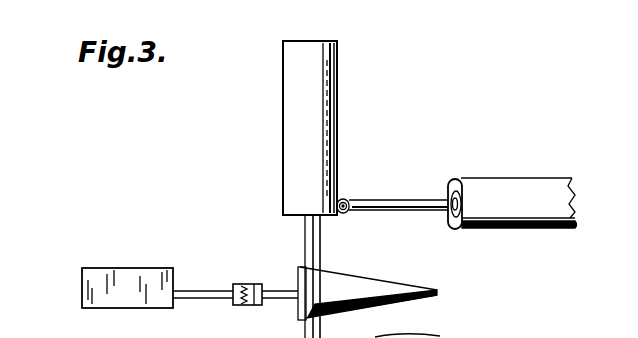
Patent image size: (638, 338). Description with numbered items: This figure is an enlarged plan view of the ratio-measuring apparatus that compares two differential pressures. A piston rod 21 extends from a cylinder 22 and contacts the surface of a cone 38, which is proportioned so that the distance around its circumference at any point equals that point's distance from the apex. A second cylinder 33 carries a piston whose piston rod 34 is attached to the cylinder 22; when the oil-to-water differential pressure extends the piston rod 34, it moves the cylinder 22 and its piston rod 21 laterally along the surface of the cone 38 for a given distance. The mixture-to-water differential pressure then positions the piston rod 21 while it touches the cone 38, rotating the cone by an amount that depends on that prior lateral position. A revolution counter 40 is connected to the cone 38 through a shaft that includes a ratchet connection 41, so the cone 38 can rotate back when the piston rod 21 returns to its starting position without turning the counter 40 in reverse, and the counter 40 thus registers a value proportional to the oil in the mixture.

The cylinder 22 is at (287, 114).
The piston rod 21 is at (308, 238).
The piston rod 34 is at (395, 200).
The cylinder 33 is at (495, 180).
The revolution counter 40 is at (128, 268).
The ratchet connection 41 is at (241, 284).
The cone 38 is at (380, 284).